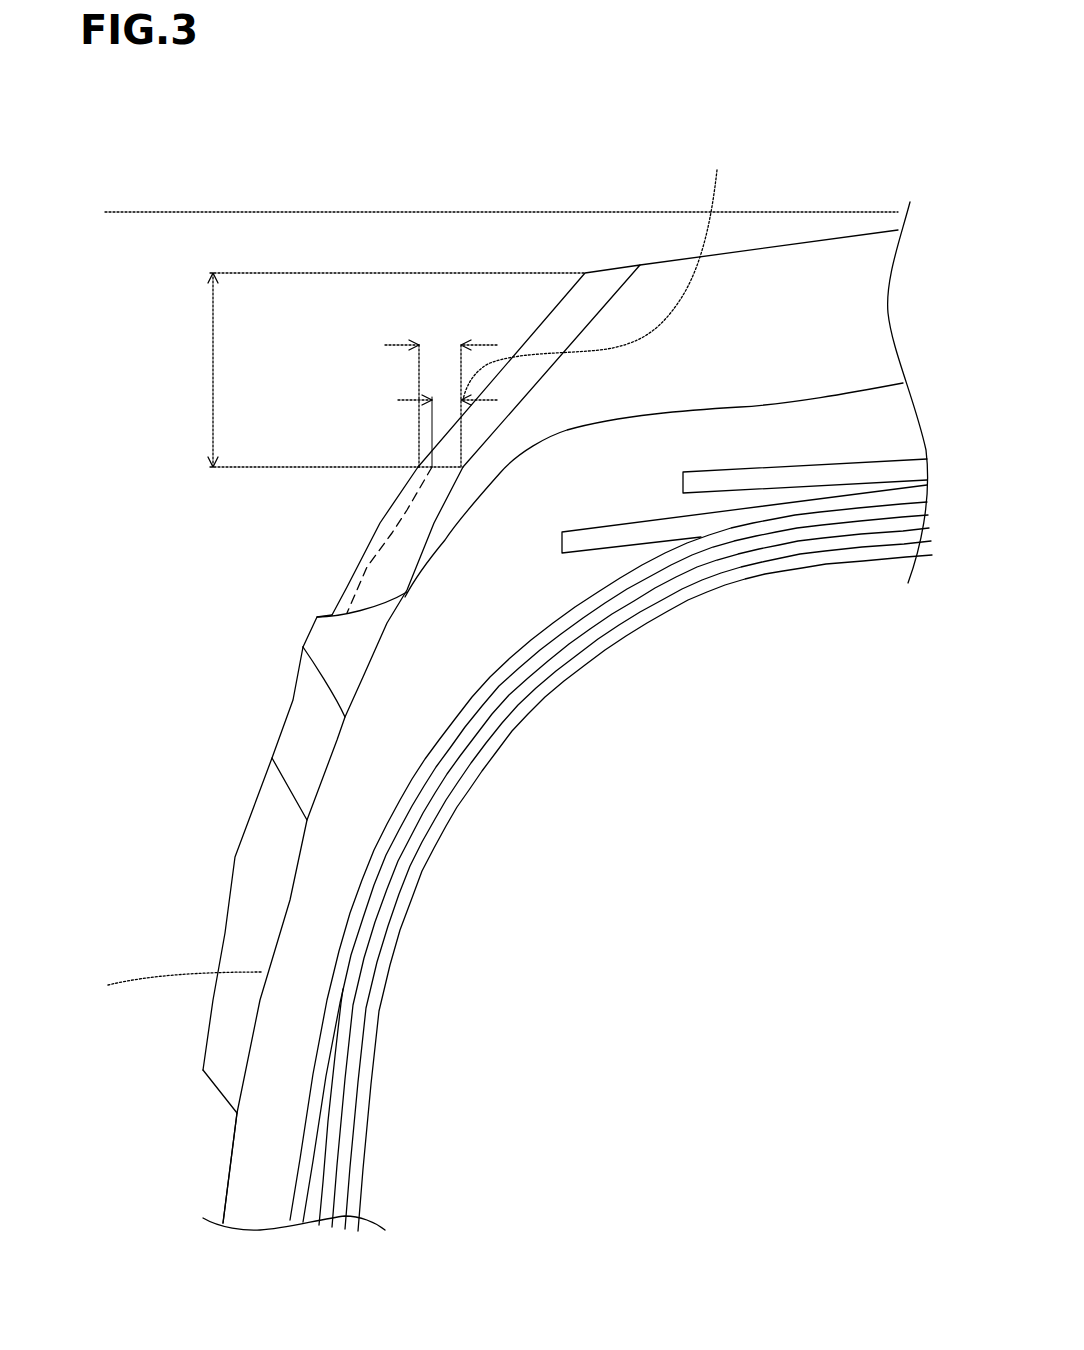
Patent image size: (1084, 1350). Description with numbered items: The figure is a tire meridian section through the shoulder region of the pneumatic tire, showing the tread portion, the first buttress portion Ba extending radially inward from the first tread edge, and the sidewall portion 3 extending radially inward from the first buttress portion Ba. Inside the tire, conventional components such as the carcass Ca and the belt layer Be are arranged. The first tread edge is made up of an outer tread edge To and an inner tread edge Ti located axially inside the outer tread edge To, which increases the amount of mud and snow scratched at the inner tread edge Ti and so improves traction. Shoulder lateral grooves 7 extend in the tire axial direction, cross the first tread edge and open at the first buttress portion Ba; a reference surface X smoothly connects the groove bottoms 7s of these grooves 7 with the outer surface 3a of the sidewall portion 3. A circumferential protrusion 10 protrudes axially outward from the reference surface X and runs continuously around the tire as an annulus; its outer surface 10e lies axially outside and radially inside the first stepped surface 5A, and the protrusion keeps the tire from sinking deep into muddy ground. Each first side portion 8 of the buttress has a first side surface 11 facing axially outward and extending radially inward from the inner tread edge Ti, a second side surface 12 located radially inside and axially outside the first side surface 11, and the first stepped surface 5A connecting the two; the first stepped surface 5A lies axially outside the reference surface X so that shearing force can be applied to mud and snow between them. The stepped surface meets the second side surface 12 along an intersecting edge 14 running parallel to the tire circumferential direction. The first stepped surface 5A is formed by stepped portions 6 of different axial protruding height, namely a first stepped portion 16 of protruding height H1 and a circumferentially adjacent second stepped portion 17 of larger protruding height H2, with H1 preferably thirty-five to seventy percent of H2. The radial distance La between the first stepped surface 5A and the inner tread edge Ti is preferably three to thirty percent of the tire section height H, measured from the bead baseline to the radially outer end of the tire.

The first stepped surface 5A is at (353, 322).
The protruding height of second stepped portion H2 is at (444, 343).
The first side surfaces 11 is at (525, 312).
The outer tread edge To is at (585, 272).
The inner tread edge Ti is at (640, 265).
The protruding height of first stepped portion H1 is at (604, 270).
The shoulder lateral grooves 7 is at (777, 303).
The groove bottoms 7s is at (802, 390).
The tire section height H is at (112, 212).
The distance between first stepped surface and inner tread edge La is at (379, 370).
The intersecting edges 14 is at (418, 462).
The second side surfaces 12 is at (352, 513).
The outer surface of circumferential protrusion 10e is at (303, 645).
The first side portions 8 is at (182, 607).
The circumferential protrusion 10 is at (285, 653).
The first buttress portion Ba is at (175, 777).
The reference surface X is at (174, 988).
The sidewall portion 3 is at (203, 1141).
The outer surface of sidewall portion 3a is at (223, 1192).
The second stepped portion 17 is at (443, 497).
The first stepped portion 16 is at (478, 470).
The stepped portions 6 is at (645, 943).
The belt layer Be is at (690, 517).
The carcass Ca is at (820, 545).